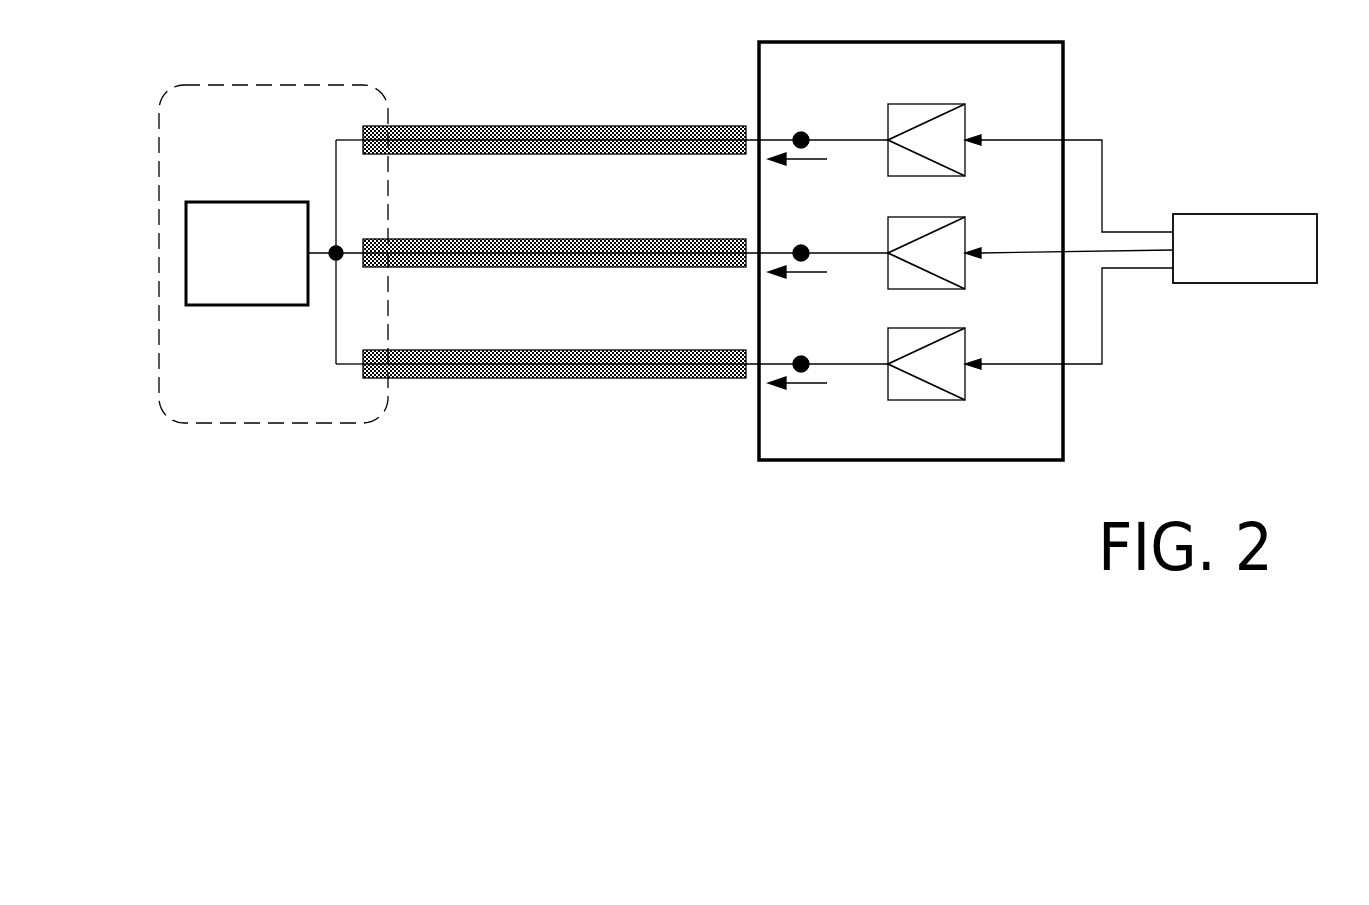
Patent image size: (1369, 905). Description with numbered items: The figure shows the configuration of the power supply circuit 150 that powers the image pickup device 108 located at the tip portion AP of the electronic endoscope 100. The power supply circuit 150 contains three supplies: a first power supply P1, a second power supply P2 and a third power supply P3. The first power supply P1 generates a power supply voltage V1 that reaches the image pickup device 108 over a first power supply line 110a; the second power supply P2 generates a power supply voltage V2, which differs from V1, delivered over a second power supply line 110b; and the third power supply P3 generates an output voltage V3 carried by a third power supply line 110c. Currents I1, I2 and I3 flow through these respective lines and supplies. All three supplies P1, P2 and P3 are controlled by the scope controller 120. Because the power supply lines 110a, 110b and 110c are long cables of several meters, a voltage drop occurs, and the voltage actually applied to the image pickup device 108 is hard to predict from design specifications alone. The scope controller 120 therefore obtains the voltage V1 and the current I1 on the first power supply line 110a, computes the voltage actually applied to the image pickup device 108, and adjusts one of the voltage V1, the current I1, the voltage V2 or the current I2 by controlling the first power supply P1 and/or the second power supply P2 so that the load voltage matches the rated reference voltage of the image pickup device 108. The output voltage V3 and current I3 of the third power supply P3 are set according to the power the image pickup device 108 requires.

The electronic endoscope 100 is at (609, 507).
The image pickup device 108 is at (248, 202).
The first power supply line 110a is at (520, 126).
The second power supply line 110b is at (520, 239).
The third power supply line 110c is at (520, 350).
The scope controller 120 is at (1233, 284).
The power supply circuit 150 is at (1065, 70).
The tip portion AP is at (295, 85).
The first power supply P1 is at (965, 113).
The second power supply P2 is at (965, 227).
The third power supply P3 is at (965, 339).
The power supply voltage V1 is at (802, 127).
The power supply voltage V2 is at (802, 240).
The output voltage V3 is at (802, 351).
The current I1 is at (797, 169).
The current I2 is at (797, 282).
The current I3 is at (797, 393).